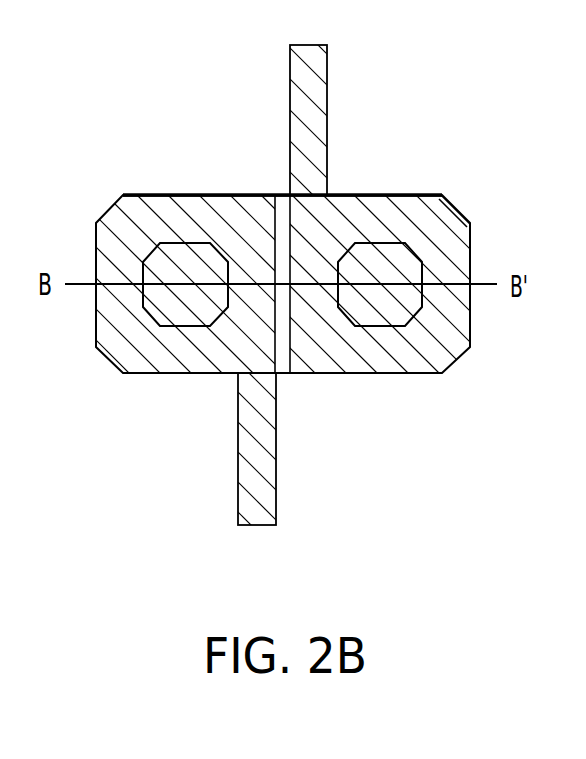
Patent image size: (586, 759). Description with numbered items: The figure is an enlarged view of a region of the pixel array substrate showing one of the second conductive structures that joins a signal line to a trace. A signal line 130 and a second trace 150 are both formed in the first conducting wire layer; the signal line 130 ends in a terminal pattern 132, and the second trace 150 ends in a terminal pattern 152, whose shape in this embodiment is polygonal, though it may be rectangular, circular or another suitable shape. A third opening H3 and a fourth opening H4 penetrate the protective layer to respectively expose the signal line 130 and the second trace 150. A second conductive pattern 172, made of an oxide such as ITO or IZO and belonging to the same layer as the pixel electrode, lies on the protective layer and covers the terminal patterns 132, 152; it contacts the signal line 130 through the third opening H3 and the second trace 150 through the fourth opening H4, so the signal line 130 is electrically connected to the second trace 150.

The signal line 130 is at (250, 478).
The terminal pattern 132 is at (156, 375).
The second trace 150 is at (310, 85).
The terminal pattern 152 is at (420, 212).
The second conductive pattern 172 is at (278, 208).
The third opening H3 is at (190, 262).
The fourth opening H4 is at (393, 262).